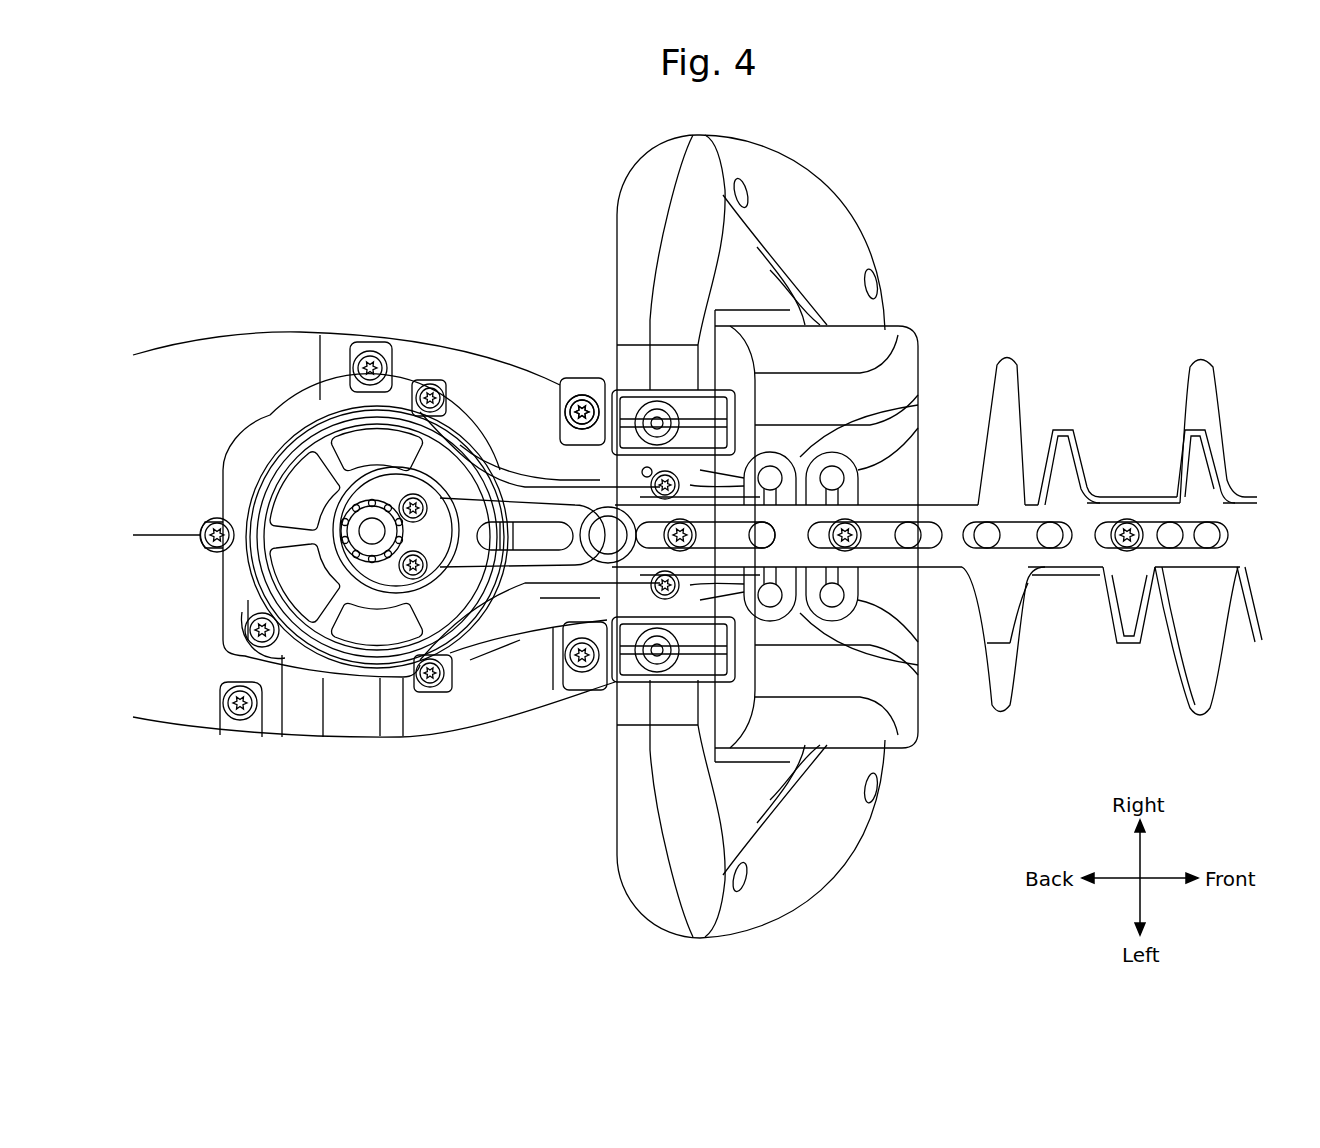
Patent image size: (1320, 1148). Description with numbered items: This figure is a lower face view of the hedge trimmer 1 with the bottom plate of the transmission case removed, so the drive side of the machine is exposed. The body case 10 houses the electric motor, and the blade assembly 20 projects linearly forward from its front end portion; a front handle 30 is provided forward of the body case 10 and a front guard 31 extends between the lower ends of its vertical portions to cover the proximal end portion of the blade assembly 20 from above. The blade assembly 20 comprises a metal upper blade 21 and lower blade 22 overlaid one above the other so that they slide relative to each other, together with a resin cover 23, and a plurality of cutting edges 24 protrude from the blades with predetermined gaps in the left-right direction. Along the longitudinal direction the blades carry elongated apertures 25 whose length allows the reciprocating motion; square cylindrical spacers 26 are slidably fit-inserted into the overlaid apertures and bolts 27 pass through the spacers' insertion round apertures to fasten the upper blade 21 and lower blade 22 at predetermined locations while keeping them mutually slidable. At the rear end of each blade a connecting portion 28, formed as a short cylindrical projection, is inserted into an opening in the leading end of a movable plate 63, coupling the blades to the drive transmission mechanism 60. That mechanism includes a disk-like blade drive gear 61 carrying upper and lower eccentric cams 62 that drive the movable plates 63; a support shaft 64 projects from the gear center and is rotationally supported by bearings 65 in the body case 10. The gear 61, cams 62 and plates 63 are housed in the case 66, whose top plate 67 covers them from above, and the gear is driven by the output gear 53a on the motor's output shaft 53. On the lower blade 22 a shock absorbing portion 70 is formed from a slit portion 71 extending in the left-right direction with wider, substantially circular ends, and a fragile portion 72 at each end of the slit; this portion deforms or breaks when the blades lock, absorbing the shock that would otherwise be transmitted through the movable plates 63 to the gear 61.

The hedge trimmer 1 is at (330, 266).
The body case 10 is at (452, 347).
The blade assembly 20 is at (942, 554).
The upper blade 21 is at (915, 590).
The lower blade 22 is at (947, 575).
The cover 23 is at (1207, 355).
The cutting edges 24 is at (1065, 430).
The elongated apertures 25 is at (745, 500).
The square cylindrical spacers 26 is at (712, 498).
The bolts 27 is at (850, 522).
The connecting portion 28 is at (603, 487).
The front handle 30 is at (843, 200).
The front guard 31 is at (905, 335).
The output shaft 53 is at (240, 652).
The output gear 53a is at (285, 657).
The drive transmission mechanism 60 is at (490, 432).
The blade drive gear 61 is at (240, 483).
The eccentric cams 62 is at (395, 500).
The movable plates 63 is at (385, 460).
The support shaft 64 is at (372, 545).
The bearings 65 is at (455, 545).
The case 66 is at (525, 615).
The top plate 67 is at (528, 681).
The shock absorbing portion 70 is at (830, 468).
The slit portion 71 is at (775, 602).
The fragile portion 72 is at (790, 480).